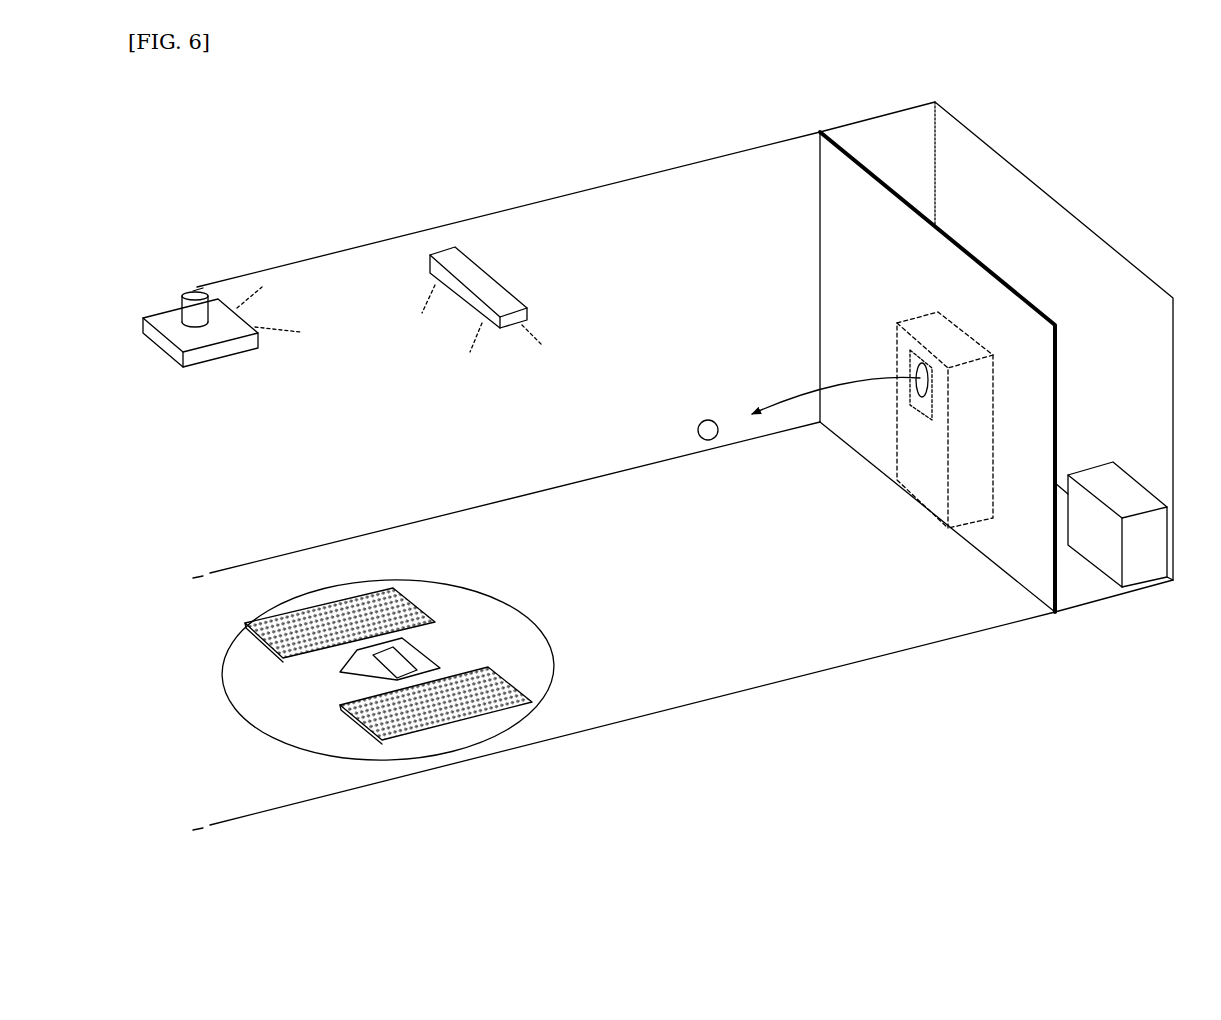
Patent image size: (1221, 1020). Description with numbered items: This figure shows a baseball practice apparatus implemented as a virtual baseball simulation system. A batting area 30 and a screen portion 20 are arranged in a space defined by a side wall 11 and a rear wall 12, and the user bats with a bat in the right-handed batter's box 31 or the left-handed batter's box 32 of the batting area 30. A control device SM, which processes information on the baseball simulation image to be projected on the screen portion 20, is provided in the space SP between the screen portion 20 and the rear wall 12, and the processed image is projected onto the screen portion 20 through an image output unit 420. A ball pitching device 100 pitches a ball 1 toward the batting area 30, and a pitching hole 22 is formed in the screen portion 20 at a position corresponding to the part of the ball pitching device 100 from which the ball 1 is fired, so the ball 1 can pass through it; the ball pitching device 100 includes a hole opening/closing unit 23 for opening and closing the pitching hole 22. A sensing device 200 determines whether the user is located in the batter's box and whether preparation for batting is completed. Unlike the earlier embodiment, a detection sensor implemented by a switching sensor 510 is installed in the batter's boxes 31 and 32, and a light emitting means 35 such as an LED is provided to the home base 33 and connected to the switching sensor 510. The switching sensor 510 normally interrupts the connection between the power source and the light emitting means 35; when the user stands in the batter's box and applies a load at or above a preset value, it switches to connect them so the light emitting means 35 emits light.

The ball 1 is at (705, 420).
The side wall 11 is at (577, 192).
The rear wall 12 is at (1070, 209).
The screen portion 20 is at (908, 197).
The pitching hole 22 is at (910, 373).
The hole opening/closing unit 23 is at (904, 398).
The batting area 30 is at (424, 653).
The right-handed batter's box 31 is at (413, 602).
The left-handed batter's box 32 is at (520, 682).
The home base 33 is at (415, 655).
The light emitting means 35 is at (353, 655).
The ball pitching device 100 is at (897, 445).
The sensing device 200 is at (487, 277).
The image output unit 420 is at (215, 350).
The switching sensor 510 is at (247, 638).
The space SP is at (1080, 347).
The control device SM is at (1137, 562).